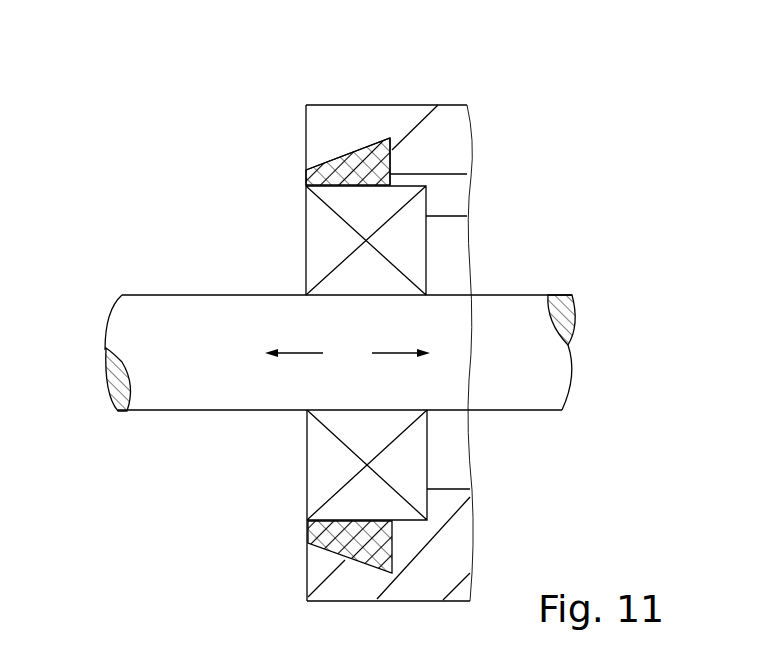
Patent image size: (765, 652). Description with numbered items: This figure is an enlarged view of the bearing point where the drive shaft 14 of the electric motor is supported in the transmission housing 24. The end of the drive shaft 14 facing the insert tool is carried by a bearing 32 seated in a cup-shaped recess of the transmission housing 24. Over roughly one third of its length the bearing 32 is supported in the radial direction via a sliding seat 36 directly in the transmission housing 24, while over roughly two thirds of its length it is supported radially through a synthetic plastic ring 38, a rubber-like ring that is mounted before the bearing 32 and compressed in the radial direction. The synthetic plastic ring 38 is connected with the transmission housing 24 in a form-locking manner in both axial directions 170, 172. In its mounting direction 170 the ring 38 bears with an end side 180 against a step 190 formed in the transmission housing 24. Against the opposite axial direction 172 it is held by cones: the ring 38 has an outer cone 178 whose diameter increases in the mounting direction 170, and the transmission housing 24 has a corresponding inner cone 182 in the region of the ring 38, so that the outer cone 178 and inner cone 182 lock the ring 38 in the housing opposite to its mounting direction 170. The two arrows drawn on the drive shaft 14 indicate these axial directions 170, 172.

The drive shaft 14 is at (181, 387).
The transmission housing 24 is at (444, 143).
The bearing 32 is at (325, 477).
The sliding seat 36 is at (407, 186).
The synthetic plastic ring 38 is at (350, 141).
The mounting direction 170 is at (395, 353).
The axial direction 172 is at (293, 352).
The outer cone 178 is at (352, 161).
The end side 180 is at (393, 150).
The inner cone 182 is at (392, 563).
The step 190 is at (392, 174).